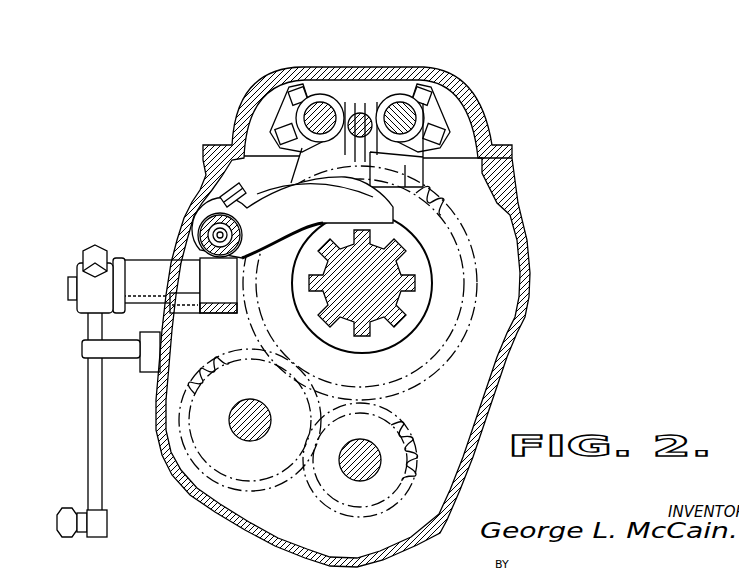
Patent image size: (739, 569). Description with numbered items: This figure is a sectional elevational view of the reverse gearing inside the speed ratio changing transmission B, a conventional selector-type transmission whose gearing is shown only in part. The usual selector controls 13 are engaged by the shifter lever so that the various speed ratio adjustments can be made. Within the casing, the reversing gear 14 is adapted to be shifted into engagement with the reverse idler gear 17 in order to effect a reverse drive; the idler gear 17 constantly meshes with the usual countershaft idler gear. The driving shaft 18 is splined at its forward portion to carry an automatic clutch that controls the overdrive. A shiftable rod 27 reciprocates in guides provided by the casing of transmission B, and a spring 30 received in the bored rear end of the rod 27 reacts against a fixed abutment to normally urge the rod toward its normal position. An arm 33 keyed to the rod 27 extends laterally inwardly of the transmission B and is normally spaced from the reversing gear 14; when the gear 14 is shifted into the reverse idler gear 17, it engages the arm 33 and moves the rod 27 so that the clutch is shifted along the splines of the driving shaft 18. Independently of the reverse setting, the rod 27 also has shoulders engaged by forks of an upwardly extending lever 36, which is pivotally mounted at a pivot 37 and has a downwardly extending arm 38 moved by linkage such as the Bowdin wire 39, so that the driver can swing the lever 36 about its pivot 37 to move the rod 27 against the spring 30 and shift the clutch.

The speed ratio changing transmission B is at (542, 242).
The selector controls 13 is at (305, 92).
The gear 14 is at (455, 205).
The reverse idler gear 17 is at (400, 430).
The driving shaft 18 is at (397, 305).
The shiftable rod 27 is at (210, 236).
The spring 30 is at (203, 246).
The arm 33 is at (372, 208).
The lever 36 is at (252, 248).
The pivot 37 is at (67, 297).
The downwardly extending arm 38 is at (95, 405).
The Bowdin wire 39 is at (84, 527).